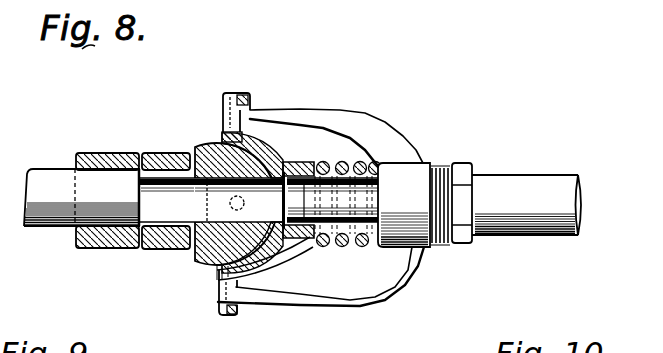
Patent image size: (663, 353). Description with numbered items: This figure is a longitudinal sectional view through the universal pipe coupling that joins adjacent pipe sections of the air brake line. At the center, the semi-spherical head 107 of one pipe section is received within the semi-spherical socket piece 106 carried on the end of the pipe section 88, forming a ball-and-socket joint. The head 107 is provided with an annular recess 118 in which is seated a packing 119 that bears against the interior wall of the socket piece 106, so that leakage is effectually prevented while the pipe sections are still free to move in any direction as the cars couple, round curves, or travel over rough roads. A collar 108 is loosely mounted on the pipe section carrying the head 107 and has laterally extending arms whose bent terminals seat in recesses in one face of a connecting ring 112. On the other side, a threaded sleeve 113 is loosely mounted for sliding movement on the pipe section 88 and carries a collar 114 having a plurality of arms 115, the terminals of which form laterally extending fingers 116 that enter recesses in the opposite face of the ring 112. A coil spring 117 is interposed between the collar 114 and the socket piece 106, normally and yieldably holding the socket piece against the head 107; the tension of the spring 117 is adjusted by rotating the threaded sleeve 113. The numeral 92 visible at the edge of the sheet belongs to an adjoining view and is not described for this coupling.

The pipe section 88 is at (535, 183).
The semi-spherical socket piece 106 is at (288, 170).
The semi-spherical head 107 is at (212, 152).
The collar 108 is at (110, 138).
The connecting ring 112 is at (233, 316).
The threaded sleeve 113 is at (462, 168).
The collar 114 is at (396, 180).
The arms 115 is at (359, 123).
The fingers 116 is at (256, 86).
The coil spring 117 is at (322, 246).
The annular recess 118 is at (258, 146).
The packing 119 is at (281, 149).
The element of adjacent figure 92 is at (180, 338).